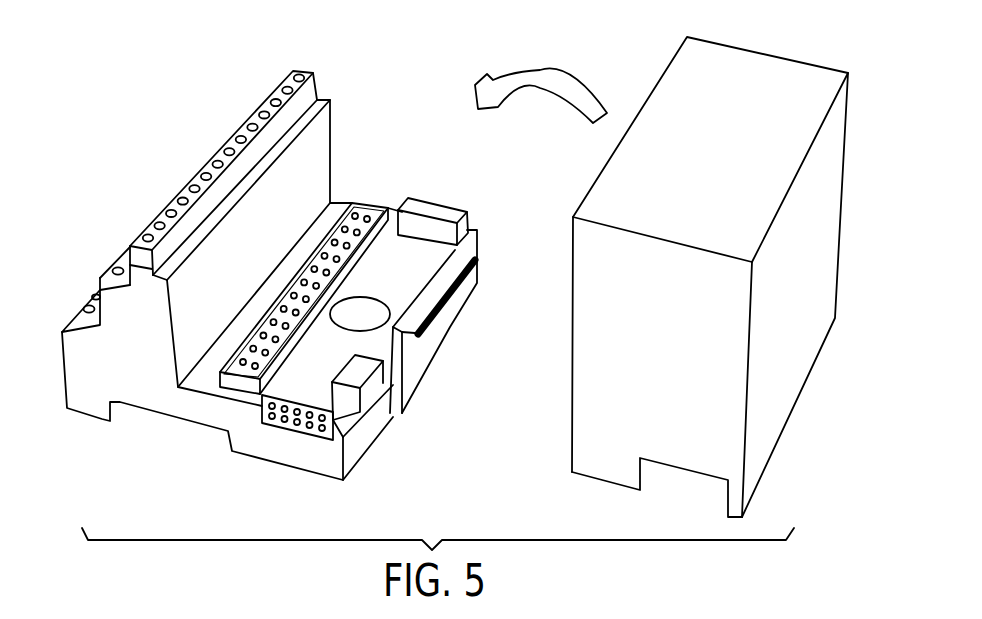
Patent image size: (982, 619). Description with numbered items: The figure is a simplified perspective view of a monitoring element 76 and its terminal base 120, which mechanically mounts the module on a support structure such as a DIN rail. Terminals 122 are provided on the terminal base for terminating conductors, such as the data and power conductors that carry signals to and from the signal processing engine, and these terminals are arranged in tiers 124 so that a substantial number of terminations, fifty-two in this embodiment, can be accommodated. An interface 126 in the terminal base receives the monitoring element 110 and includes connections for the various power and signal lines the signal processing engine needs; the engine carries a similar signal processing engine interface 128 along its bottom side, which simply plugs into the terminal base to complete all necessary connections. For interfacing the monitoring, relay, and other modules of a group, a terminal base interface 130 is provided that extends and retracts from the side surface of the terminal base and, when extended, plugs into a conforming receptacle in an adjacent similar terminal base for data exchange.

The monitoring element 76 is at (618, 62).
The monitoring element 110 is at (710, 282).
The terminal base 120 is at (258, 292).
The terminals 122 is at (168, 214).
The tiers 124 is at (119, 278).
The interface 126 is at (364, 200).
The signal processing engine interface 128 is at (623, 490).
The terminal base interface 130 is at (311, 433).